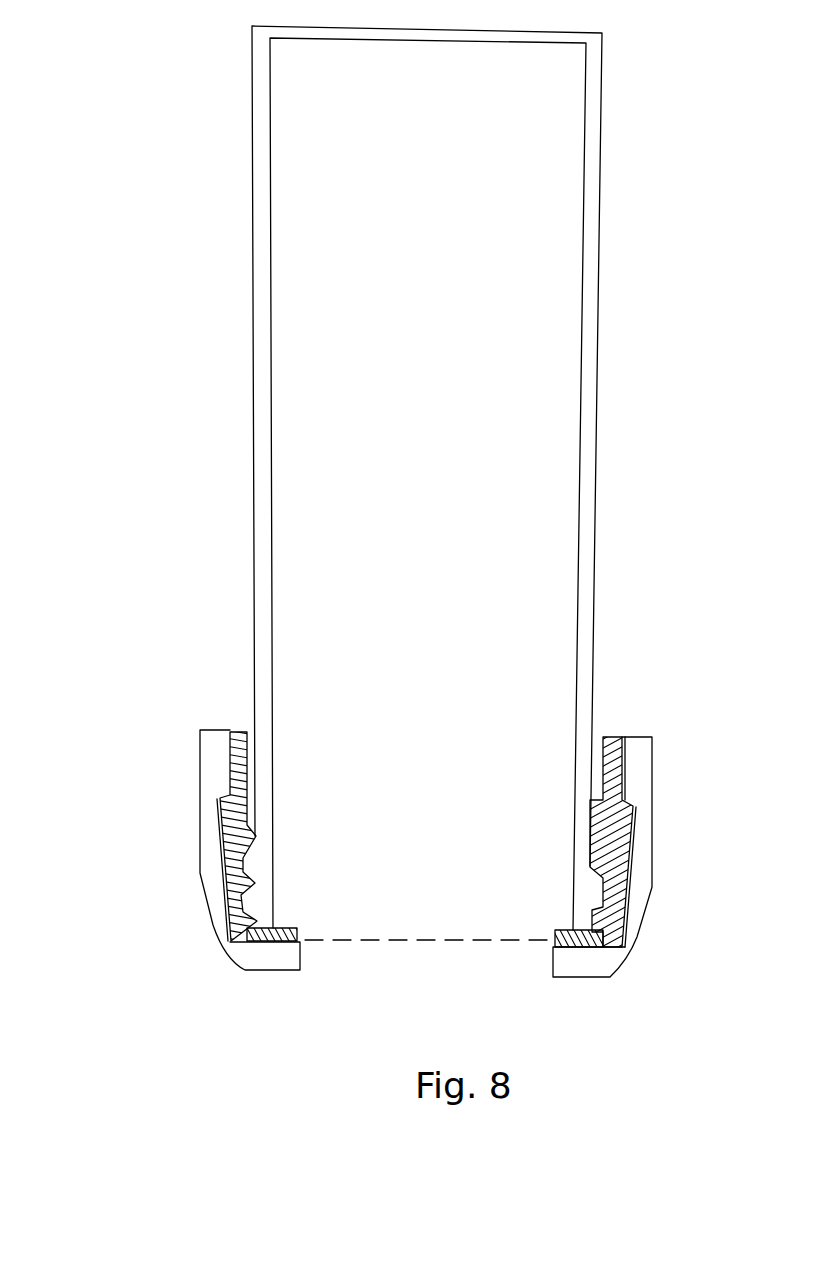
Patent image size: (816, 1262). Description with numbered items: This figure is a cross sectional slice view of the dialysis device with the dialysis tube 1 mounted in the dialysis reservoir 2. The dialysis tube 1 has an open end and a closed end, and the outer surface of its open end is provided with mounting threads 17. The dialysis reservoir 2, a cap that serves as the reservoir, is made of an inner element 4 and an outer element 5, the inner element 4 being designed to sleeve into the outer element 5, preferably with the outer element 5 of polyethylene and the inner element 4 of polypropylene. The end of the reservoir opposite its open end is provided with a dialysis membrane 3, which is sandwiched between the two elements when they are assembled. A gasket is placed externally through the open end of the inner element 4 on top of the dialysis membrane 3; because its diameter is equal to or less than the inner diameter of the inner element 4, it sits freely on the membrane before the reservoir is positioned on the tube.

The dialysis tube 1 is at (598, 337).
The dialysis reservoir 2 is at (153, 822).
The dialysis membrane 3 is at (408, 935).
The inner element 4 is at (610, 734).
The outer element 5 is at (642, 735).
The mounting threads 17 is at (256, 859).